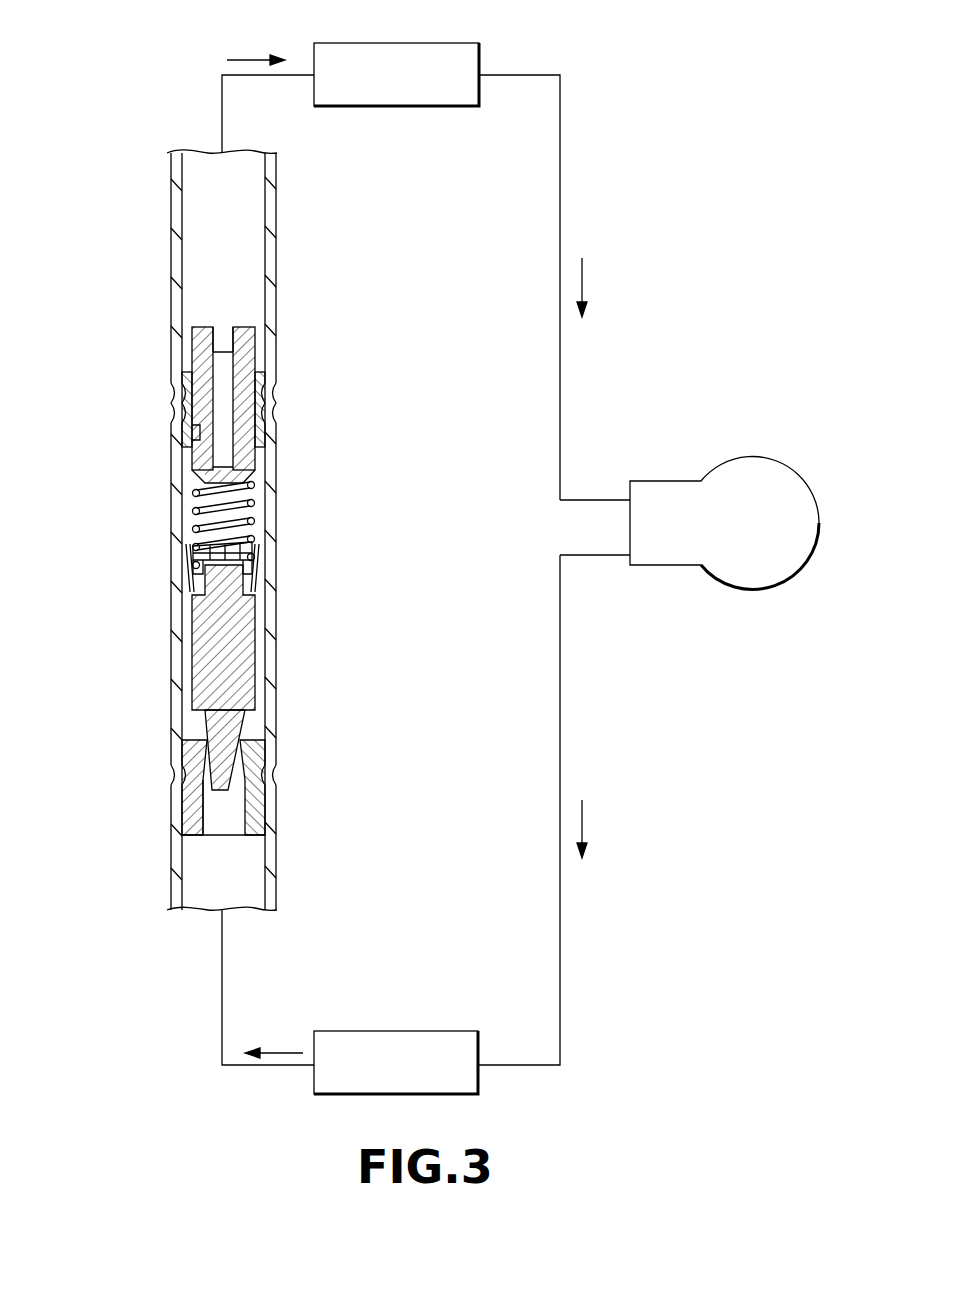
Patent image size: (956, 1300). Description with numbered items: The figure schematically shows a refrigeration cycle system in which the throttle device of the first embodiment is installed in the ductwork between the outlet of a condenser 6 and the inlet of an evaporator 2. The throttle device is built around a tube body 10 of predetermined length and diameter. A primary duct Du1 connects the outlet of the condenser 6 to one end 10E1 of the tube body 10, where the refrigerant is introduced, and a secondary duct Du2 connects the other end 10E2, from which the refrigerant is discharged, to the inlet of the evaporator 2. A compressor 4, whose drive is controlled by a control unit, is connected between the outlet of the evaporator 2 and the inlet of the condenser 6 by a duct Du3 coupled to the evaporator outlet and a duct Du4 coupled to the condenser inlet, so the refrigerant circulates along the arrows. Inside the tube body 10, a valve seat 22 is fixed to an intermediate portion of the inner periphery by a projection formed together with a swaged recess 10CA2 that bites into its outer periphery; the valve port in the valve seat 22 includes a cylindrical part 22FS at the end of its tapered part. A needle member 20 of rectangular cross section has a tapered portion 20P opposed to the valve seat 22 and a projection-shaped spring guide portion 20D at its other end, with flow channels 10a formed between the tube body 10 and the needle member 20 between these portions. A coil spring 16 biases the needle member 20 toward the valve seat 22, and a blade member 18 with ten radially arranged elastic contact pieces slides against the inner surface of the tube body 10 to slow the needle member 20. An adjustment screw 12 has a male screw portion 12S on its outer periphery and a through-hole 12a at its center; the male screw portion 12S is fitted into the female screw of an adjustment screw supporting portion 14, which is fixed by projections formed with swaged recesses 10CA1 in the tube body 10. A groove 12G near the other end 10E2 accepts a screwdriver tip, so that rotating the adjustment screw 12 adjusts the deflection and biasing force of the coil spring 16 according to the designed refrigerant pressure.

The evaporator 2 is at (390, 44).
The compressor 4 is at (753, 457).
The condenser 6 is at (390, 1032).
The primary duct Du1 is at (222, 1038).
The secondary duct Du2 is at (222, 126).
The duct Du3 is at (561, 218).
The duct Du4 is at (561, 968).
The tube body 10 is at (278, 283).
The flow channels 10a is at (256, 221).
The one end of the tube body 10E1 is at (176, 885).
The other end of the tube body 10E2 is at (172, 284).
The recesses 10CA1 is at (276, 419).
The recess 10CA2 is at (276, 791).
The adjustment screw 12 is at (192, 341).
The groove 12G is at (220, 325).
The male screw portion 12S is at (182, 381).
The through-hole 12a is at (200, 431).
The adjustment screw supporting portion 14 is at (268, 383).
The coil spring 16 is at (262, 498).
The blade member 18 is at (262, 549).
The needle member 20 is at (250, 601).
The spring guide portion 20D is at (190, 581).
The tapered portion 20P is at (245, 719).
The valve seat 22 is at (264, 756).
The cylindrical part 22FS is at (203, 823).